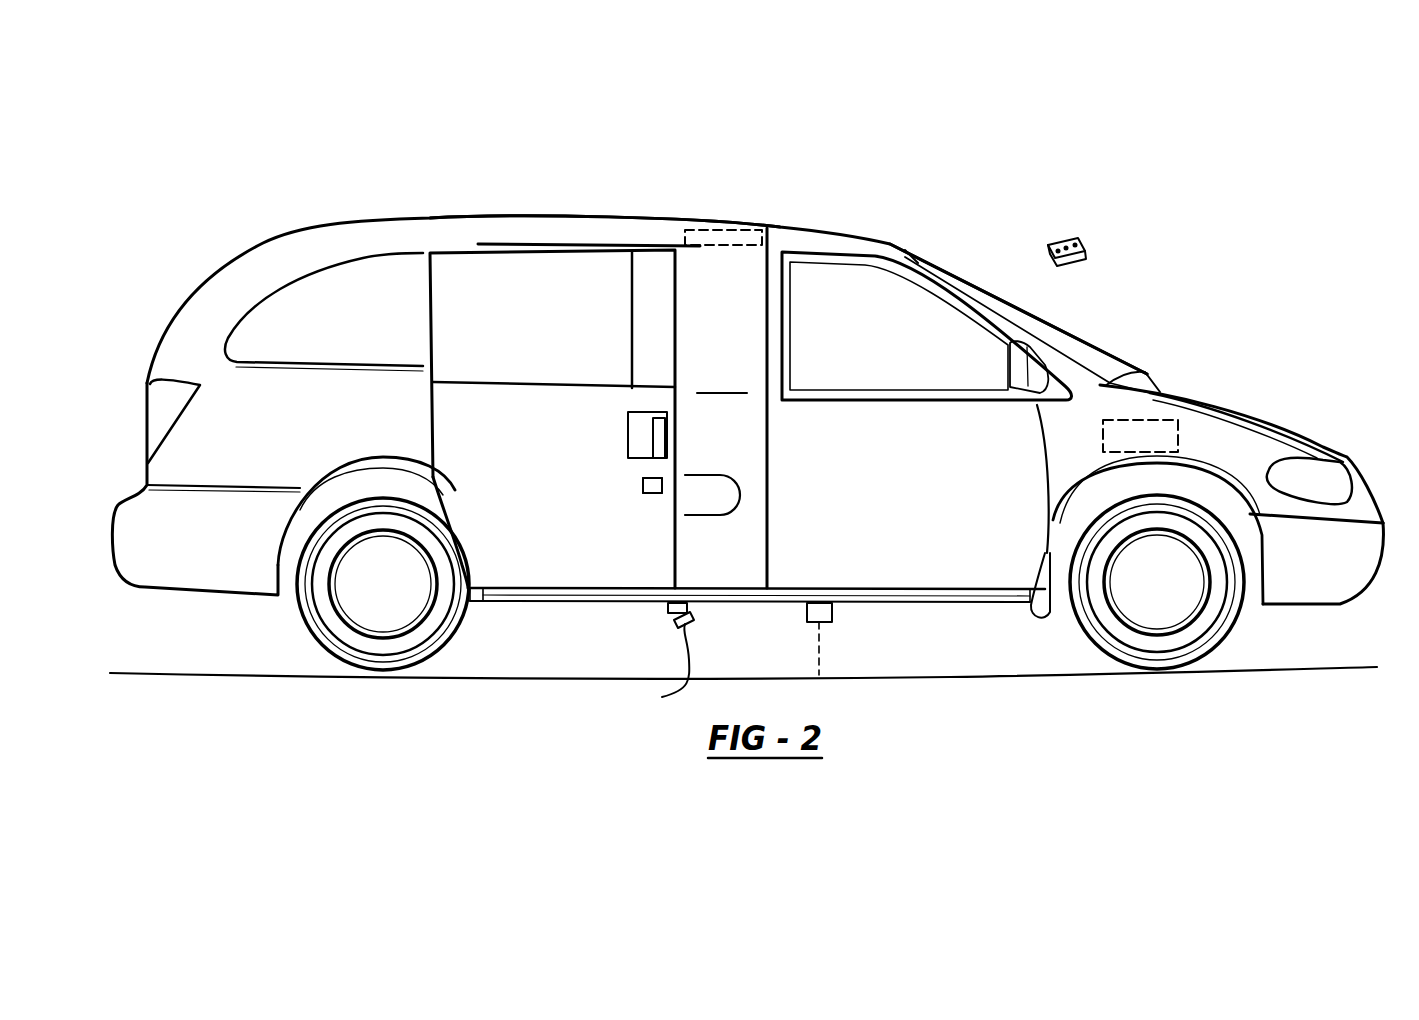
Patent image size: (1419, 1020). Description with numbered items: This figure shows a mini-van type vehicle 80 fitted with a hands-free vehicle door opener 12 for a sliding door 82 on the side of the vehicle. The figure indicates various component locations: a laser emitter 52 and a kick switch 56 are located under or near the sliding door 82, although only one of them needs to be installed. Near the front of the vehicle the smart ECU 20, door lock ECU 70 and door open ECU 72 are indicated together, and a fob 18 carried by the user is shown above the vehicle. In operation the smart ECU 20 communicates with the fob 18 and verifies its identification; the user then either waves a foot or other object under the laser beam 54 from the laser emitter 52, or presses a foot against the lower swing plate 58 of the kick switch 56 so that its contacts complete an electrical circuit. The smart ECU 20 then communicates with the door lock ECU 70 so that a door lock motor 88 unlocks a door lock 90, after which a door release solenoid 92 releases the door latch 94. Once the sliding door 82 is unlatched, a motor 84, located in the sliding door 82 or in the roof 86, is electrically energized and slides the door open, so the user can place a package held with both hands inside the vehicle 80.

The hands-free vehicle door opener 12 is at (1196, 230).
The fob 18 is at (1072, 238).
The smart ECU 20 is at (1195, 361).
The door lock ECU 70 is at (1195, 361).
The door open ECU 72 is at (1155, 420).
The laser emitter 52 is at (832, 622).
The laser beam 54 is at (819, 648).
The kick switch 56 is at (665, 612).
The lower swing plate 58 is at (661, 667).
The vehicle 80 is at (890, 240).
The sliding door 82 is at (428, 268).
The motor 84 is at (703, 228).
The roof 86 is at (502, 217).
The door lock motor 88 is at (628, 432).
The door lock 90 is at (653, 450).
The door release solenoid 92 is at (647, 492).
The door latch 94 is at (657, 494).